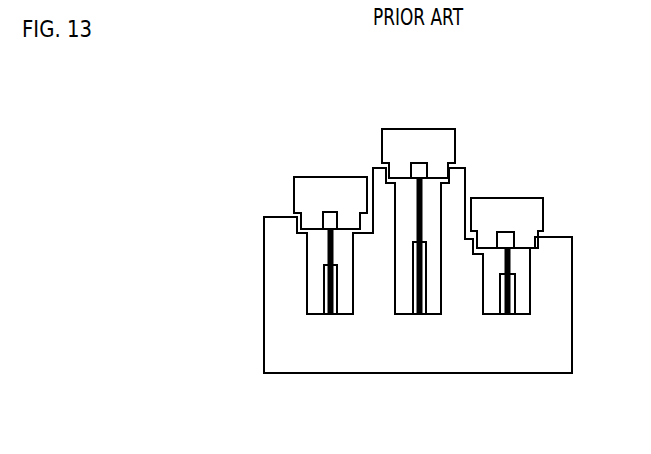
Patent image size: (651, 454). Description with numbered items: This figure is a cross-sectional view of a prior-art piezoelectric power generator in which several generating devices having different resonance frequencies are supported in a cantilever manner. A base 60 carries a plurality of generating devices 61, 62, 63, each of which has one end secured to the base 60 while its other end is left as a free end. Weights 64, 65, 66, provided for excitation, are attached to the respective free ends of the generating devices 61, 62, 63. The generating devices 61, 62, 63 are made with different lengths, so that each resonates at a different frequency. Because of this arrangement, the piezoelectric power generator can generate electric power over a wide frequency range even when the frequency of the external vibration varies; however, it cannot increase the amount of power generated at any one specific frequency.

The base 60 is at (427, 358).
The generating device 61 is at (327, 249).
The generating device 62 is at (417, 195).
The generating device 63 is at (510, 264).
The weight 64 is at (316, 186).
The weight 65 is at (427, 133).
The weight 66 is at (516, 202).